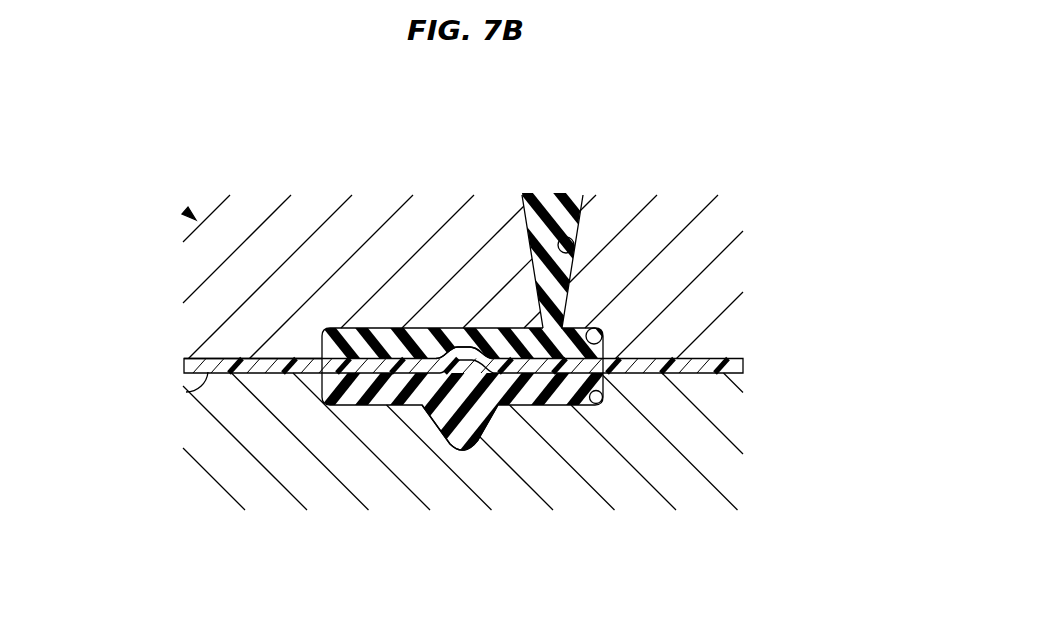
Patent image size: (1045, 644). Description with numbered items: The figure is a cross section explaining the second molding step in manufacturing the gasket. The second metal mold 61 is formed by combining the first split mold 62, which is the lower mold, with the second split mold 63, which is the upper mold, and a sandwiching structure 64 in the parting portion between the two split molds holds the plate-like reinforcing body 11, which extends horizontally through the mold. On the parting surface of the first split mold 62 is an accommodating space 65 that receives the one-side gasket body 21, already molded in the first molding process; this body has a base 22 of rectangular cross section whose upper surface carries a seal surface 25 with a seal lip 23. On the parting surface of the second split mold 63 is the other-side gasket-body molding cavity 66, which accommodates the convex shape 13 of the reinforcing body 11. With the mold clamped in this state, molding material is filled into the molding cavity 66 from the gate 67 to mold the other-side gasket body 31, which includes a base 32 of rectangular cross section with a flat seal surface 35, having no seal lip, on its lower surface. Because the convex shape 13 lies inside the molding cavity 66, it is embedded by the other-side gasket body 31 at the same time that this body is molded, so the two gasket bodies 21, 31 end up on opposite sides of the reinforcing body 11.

The reinforcing body 11 is at (743, 363).
The convex shape 13 is at (468, 347).
The one-side gasket body 21 is at (551, 393).
The base 22 is at (383, 405).
The seal lip 23 is at (463, 438).
The seal surface 25 is at (417, 405).
The other-side gasket body 31 is at (508, 328).
The base 32 is at (382, 328).
The seal surface 35 is at (417, 328).
The second metal mold 61 is at (190, 215).
The first split mold 62 is at (208, 423).
The second split mold 63 is at (217, 300).
The sandwiching structure 64 is at (190, 392).
The accommodating space 65 is at (603, 393).
The other-side gasket-body molding cavity 66 is at (590, 327).
The gate 67 is at (575, 228).